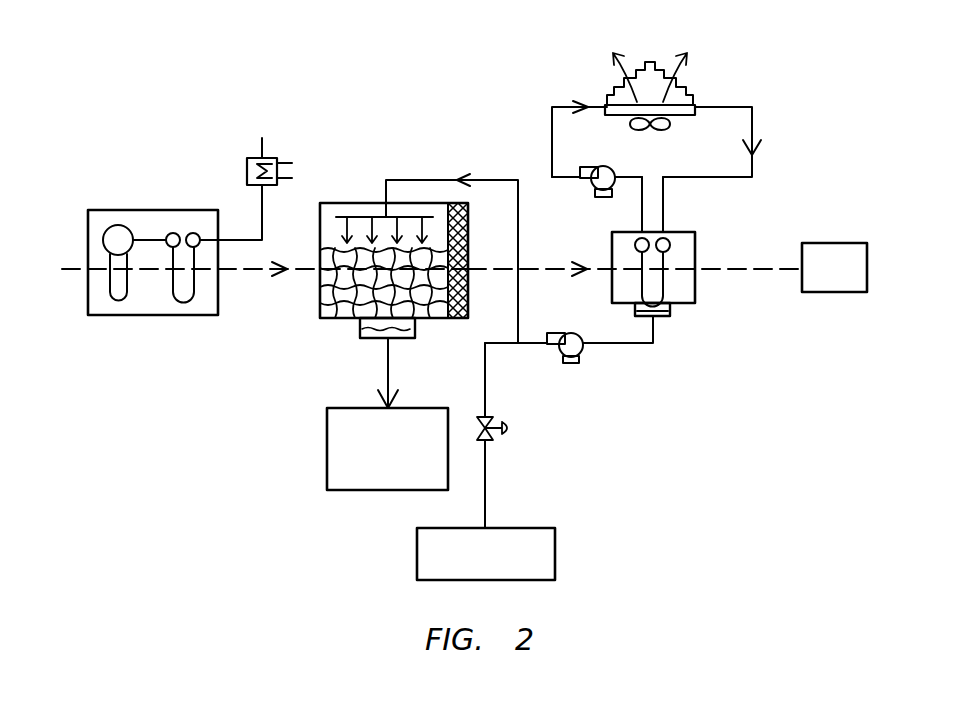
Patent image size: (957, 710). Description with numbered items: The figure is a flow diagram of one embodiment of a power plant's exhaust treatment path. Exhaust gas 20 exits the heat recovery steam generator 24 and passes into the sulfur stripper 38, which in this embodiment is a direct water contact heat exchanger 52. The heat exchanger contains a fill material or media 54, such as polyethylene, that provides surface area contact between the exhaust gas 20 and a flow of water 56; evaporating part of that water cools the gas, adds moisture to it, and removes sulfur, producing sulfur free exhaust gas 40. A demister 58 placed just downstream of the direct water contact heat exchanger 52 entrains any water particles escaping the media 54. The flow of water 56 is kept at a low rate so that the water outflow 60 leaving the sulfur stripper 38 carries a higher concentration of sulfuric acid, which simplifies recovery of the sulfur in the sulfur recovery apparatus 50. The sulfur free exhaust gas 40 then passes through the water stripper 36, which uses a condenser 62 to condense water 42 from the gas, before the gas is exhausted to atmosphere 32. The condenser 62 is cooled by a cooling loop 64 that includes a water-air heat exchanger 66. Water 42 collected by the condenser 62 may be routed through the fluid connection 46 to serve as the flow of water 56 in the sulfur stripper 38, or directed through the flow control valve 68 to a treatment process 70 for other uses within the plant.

The exhaust gas 20 is at (253, 270).
The heat recovery steam generator 24 is at (157, 210).
The atmosphere 32 is at (818, 293).
The water stripper 36 is at (702, 209).
The sulfur stripper 38 is at (336, 253).
The sulfur free exhaust gas 40 is at (532, 268).
The water 42 is at (617, 347).
The fluid connection 46 is at (420, 180).
The sulfur recovery apparatus 50 is at (358, 492).
The direct water contact heat exchanger 52 is at (335, 330).
The fill material or media 54 is at (320, 296).
The flow of water 56 is at (345, 227).
The demister 58 is at (466, 310).
The water outflow 60 is at (387, 382).
The condenser 62 is at (676, 231).
The cooling loop 64 is at (702, 123).
The water-air heat exchanger 66 is at (683, 83).
The flow control valve 68 is at (491, 418).
The treatment process 70 is at (540, 528).